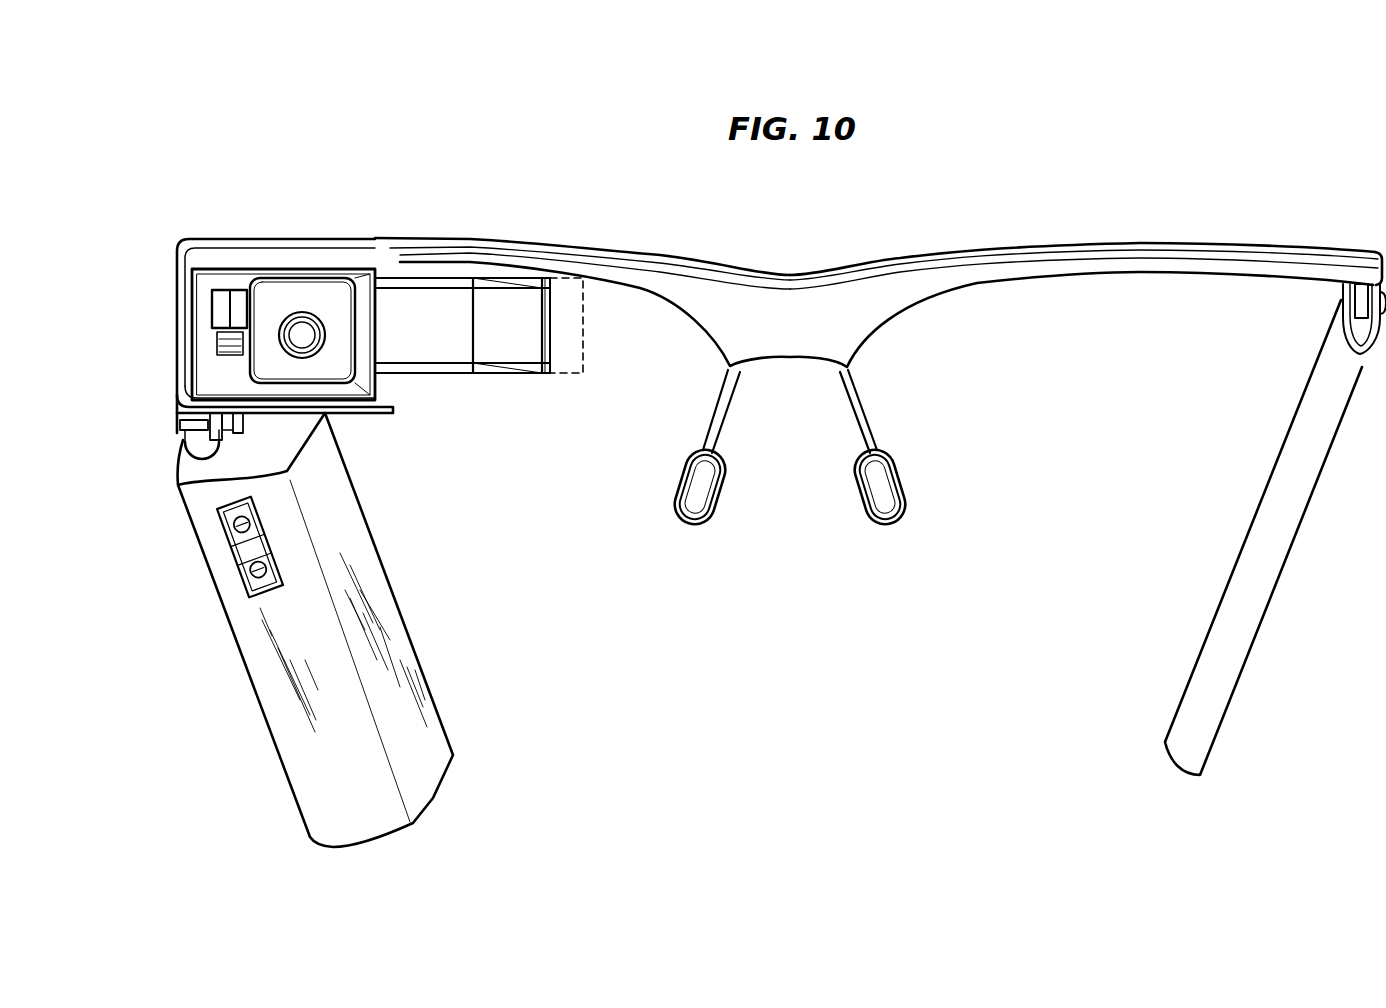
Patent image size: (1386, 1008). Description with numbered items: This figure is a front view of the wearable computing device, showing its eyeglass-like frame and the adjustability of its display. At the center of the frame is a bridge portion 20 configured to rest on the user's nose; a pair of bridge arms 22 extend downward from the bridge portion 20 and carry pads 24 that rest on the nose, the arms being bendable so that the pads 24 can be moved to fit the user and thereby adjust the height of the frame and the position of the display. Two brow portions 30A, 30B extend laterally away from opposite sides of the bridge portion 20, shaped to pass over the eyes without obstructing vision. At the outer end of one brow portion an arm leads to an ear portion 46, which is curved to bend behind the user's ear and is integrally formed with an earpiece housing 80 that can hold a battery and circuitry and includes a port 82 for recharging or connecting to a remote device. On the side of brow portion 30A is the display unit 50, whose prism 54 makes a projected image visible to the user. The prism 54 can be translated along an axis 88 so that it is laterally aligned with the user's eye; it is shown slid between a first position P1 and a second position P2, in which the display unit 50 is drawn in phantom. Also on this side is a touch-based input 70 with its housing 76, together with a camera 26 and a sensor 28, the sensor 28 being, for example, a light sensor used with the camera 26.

The bridge portion 20 is at (777, 495).
The bridge arms 22 is at (713, 418).
The pads 24 is at (672, 510).
The camera 26 is at (297, 333).
The sensor 28 is at (220, 303).
The brow portion 30A is at (533, 245).
The brow portion 30B is at (1047, 247).
The ear portions 46 is at (1327, 453).
The display unit 50 is at (402, 393).
The prism 54 is at (428, 345).
The touch-based input 70 is at (160, 378).
The housing 76 is at (182, 432).
The earpiece housing 80 is at (392, 612).
The port 82 is at (243, 578).
The axis 88 is at (242, 268).
The first position P1 is at (552, 373).
The second position P2 is at (586, 333).